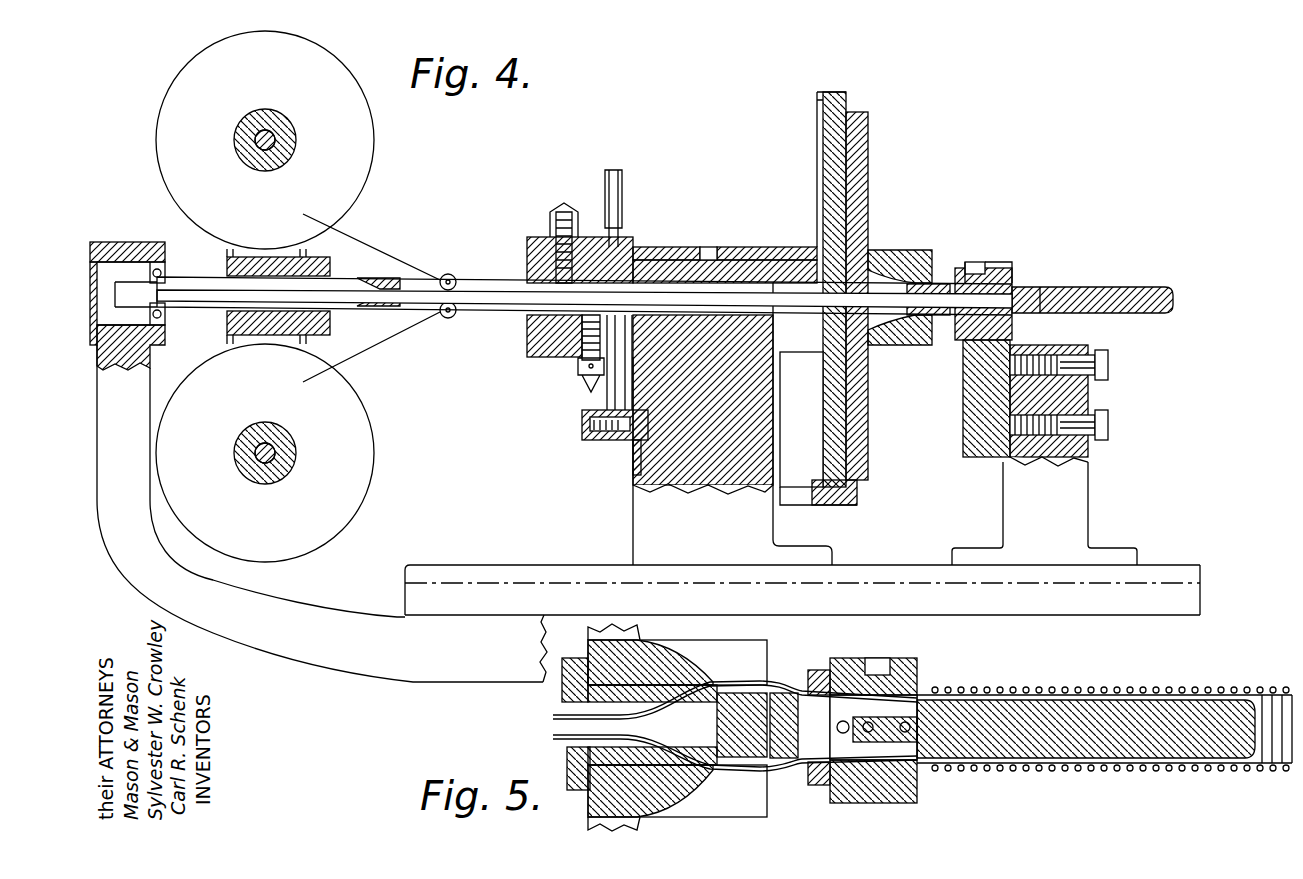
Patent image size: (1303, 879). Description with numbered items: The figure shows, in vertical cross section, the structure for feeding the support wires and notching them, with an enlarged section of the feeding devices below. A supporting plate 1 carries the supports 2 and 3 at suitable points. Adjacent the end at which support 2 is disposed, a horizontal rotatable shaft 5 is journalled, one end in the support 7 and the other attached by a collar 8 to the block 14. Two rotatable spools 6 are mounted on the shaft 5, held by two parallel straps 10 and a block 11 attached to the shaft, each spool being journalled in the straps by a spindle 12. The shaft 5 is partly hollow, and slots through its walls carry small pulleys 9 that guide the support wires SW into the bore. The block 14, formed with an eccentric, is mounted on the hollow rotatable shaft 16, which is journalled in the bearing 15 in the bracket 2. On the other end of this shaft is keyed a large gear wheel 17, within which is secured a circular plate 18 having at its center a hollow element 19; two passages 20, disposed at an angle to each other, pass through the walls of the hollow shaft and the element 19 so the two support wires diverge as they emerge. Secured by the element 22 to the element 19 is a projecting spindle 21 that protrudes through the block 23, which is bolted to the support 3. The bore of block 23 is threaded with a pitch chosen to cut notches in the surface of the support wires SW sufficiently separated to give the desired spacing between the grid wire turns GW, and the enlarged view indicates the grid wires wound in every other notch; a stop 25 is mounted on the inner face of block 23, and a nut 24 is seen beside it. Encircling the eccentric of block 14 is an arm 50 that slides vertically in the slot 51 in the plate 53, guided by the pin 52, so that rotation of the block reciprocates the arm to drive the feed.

In FIG. 4, the supporting plate 1 is at (449, 578).
In FIG. 4, the support 2 is at (640, 514).
In FIG. 4, the support 3 is at (1017, 505).
In FIG. 4, the horizontal rotatable shaft 5 is at (505, 277).
In FIG. 5, the horizontal rotatable shaft 5 is at (530, 771).
In FIG. 4, the rotatable spools 6 is at (350, 206).
In FIG. 4, the support 7 is at (333, 652).
In FIG. 4, the collar 8 is at (543, 250).
In FIG. 4, the small pulleys 9 is at (450, 272).
In FIG. 4, the parallel straps 10 is at (297, 353).
In FIG. 4, the block 11 is at (262, 337).
In FIG. 4, the spindle 12 is at (305, 142).
In FIG. 4, the block 14 is at (560, 362).
In FIG. 4, the bearing 15 is at (679, 258).
In FIG. 4, the hollow rotatable shaft 16 is at (734, 258).
In FIG. 4, the large gear wheel 17 is at (825, 186).
In FIG. 4, the circular plate 18 is at (885, 208).
In FIG. 5, the circular plate 18 is at (649, 636).
In FIG. 4, the hollow element 19 is at (867, 335).
In FIG. 5, the hollow element 19 is at (668, 799).
In FIG. 4, the passages 20 is at (900, 282).
In FIG. 5, the passages 20 is at (672, 718).
In FIG. 4, the projecting spindle 21 is at (1033, 288).
In FIG. 5, the projecting spindle 21 is at (1063, 712).
In FIG. 4, the element 22 is at (940, 322).
In FIG. 5, the element 22 is at (785, 762).
In FIG. 4, the block 23 is at (957, 413).
In FIG. 5, the block 23 is at (926, 794).
In FIG. 4, the nut 24 is at (1010, 283).
In FIG. 4, the stop 25 is at (964, 266).
In FIG. 5, the stop 25 is at (817, 673).
In FIG. 4, the arm 50 is at (615, 392).
In FIG. 4, the slot 51 is at (609, 396).
In FIG. 4, the pin 52 is at (607, 437).
In FIG. 4, the plate 53 is at (635, 472).
In FIG. 4, the support wires SW is at (378, 268).
In FIG. 5, the support wires SW is at (553, 737).
In FIG. 5, the grid wire turns GW is at (1202, 771).